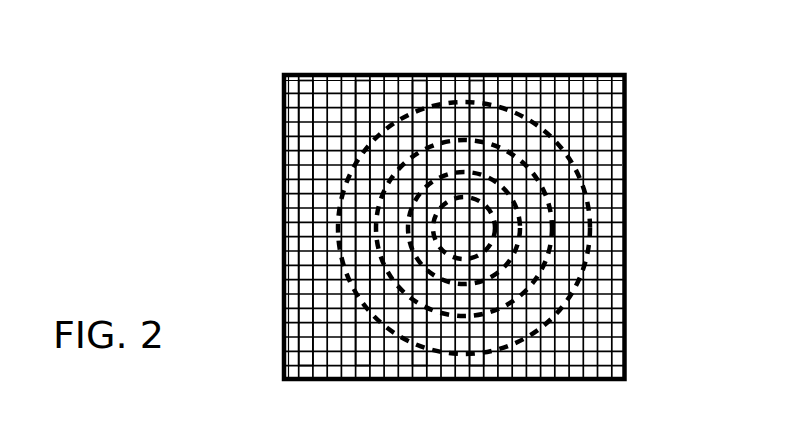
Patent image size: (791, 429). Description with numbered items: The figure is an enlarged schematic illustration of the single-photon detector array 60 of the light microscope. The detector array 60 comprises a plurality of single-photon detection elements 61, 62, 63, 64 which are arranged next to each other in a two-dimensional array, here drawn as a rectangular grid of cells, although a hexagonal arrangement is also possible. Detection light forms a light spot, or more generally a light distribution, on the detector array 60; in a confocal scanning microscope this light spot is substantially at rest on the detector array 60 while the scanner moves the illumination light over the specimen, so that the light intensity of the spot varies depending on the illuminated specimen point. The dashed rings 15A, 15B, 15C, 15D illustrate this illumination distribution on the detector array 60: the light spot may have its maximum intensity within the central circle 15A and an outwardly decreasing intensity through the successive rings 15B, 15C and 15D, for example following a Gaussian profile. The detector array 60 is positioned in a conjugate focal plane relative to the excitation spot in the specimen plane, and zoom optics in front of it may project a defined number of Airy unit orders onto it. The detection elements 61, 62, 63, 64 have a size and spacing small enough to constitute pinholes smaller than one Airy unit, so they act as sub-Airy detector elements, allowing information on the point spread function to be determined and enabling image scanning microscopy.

The single-photon detector array 60 is at (543, 68).
The single-photon detection element 61 is at (305, 85).
The single-photon detection element 62 is at (357, 85).
The single-photon detection element 63 is at (420, 85).
The single-photon detection element 64 is at (472, 85).
The central circle 15A is at (438, 250).
The ring 15B is at (410, 213).
The ring 15C is at (390, 175).
The ring 15D is at (370, 145).